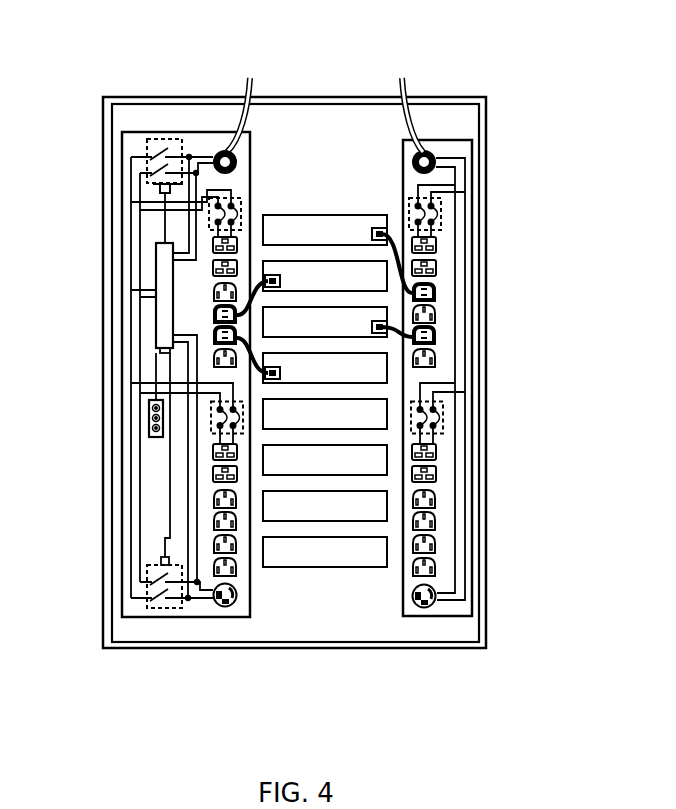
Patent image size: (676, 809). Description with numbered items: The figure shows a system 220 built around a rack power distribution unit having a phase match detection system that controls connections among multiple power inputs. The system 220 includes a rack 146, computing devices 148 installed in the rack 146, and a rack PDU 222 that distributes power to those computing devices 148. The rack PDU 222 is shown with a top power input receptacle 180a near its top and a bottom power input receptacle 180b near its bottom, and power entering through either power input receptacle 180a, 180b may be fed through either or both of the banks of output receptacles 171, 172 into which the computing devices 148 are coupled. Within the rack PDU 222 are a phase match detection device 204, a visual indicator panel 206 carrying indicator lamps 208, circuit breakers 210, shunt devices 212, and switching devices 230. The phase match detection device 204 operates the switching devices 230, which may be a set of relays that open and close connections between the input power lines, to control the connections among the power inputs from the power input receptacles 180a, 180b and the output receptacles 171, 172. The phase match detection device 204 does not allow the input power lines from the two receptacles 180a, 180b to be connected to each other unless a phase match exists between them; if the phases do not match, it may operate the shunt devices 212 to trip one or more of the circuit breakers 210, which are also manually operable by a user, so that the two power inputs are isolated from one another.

The rack 146 is at (486, 280).
The computing devices 148 is at (344, 243).
The bank of output receptacles 171 is at (246, 230).
The bank of output receptacles 172 is at (246, 578).
The top power input receptacle 180a is at (238, 160).
The bottom power input receptacle 180b is at (225, 607).
The phase match detection device 204 is at (156, 265).
The visual indicator panel 206 is at (149, 408).
The indicator lamps 208 is at (149, 428).
The circuit breakers 210 is at (165, 608).
The shunt devices 212 is at (157, 187).
The system 220 is at (386, 60).
The rack PDU 222 is at (200, 132).
The switching devices 230 is at (160, 139).